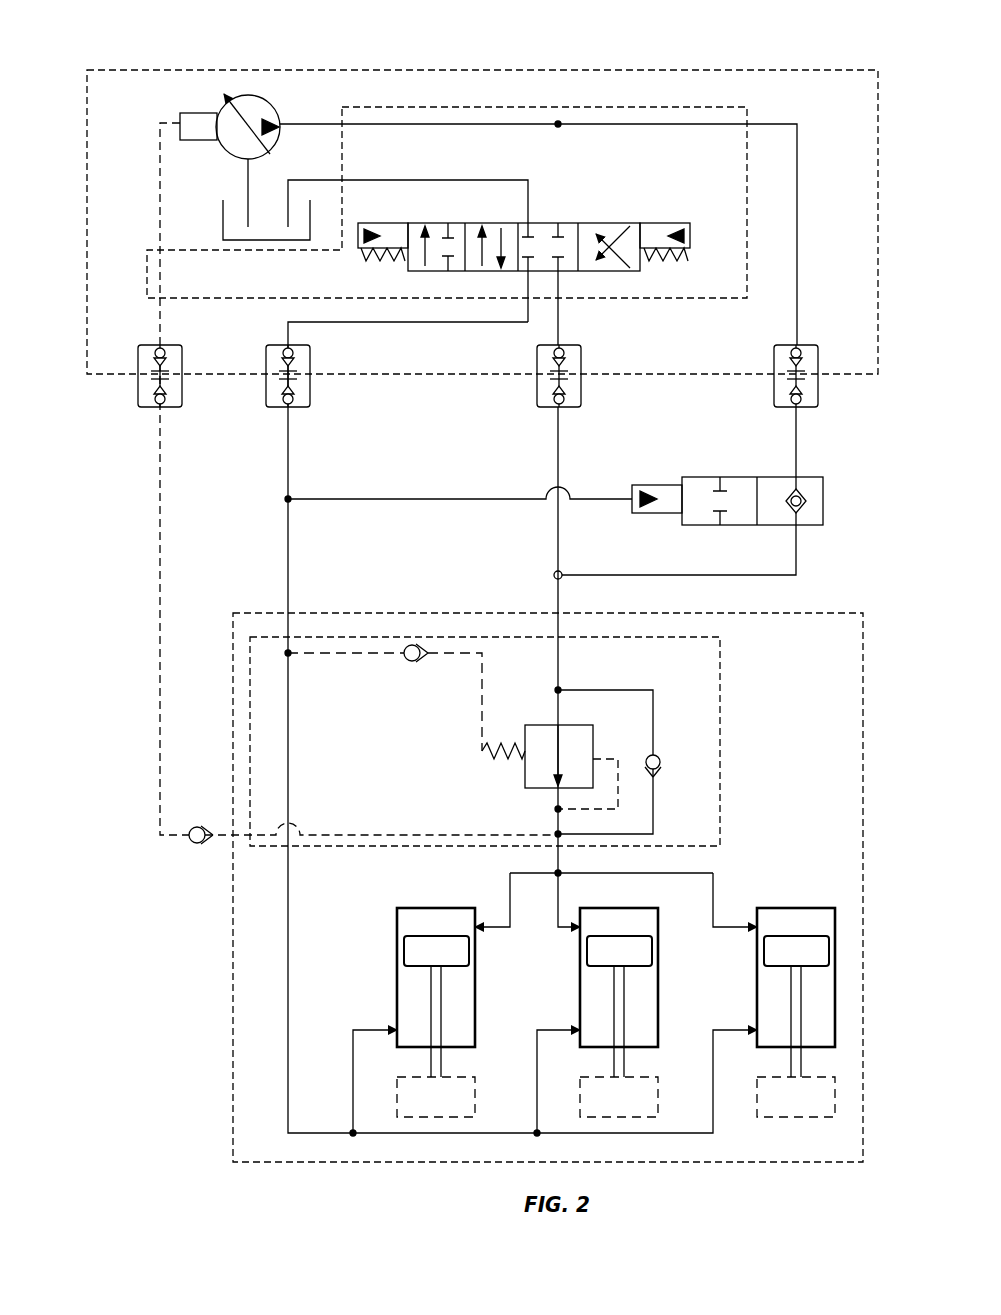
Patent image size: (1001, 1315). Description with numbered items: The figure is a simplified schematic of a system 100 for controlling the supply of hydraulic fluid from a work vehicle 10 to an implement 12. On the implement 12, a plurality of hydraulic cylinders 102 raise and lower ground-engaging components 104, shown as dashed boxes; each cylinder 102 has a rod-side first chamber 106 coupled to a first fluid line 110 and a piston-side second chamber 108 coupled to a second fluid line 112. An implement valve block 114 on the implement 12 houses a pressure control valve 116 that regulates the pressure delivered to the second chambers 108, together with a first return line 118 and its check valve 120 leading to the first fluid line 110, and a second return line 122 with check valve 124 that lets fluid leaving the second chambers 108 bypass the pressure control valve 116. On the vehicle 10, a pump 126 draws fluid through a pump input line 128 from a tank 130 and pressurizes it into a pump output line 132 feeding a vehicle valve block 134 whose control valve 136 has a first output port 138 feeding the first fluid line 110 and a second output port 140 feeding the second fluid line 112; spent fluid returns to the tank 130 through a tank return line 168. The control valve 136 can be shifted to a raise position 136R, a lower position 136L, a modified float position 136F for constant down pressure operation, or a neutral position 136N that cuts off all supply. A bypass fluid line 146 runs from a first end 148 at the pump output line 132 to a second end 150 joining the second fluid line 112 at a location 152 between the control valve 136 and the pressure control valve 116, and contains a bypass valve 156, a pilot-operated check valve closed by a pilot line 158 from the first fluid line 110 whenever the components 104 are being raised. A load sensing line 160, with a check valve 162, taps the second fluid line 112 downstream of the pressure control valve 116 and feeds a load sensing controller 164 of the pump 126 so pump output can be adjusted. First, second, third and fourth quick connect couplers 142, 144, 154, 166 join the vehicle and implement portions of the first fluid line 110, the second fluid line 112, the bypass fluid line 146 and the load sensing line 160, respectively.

The work vehicle 10 is at (83, 87).
The implement 12 is at (233, 1030).
The system 100 is at (102, 470).
The hydraulic cylinders 102 is at (397, 957).
The ground-engaging components 104 is at (458, 1077).
The first chamber 106 is at (465, 1010).
The second chamber 108 is at (436, 908).
The first fluid line 110 is at (388, 322).
The second fluid line 112 is at (560, 324).
The implement valve block 114 is at (720, 720).
The pressure control valve 116 is at (540, 725).
The first return line 118 is at (332, 653).
The check valve 120 is at (420, 660).
The second return line 122 is at (655, 710).
The check valve 124 is at (660, 760).
The pump 126 is at (262, 96).
The pump input line 128 is at (248, 173).
The tank 130 is at (223, 219).
The pump output line 132 is at (398, 126).
The vehicle valve block 134 is at (727, 107).
The control valve 136 is at (652, 222).
The modified float position 136F is at (400, 271).
The raise position 136R is at (580, 210).
The lower position 136L is at (482, 223).
The neutral position 136N is at (568, 223).
The first output port 138 is at (524, 280).
The second output port 140 is at (562, 275).
The first quick connect coupler 142 is at (312, 392).
The second quick connect coupler 144 is at (582, 392).
The bypass fluid line 146 is at (798, 238).
The first end 148 is at (585, 124).
The second end 150 is at (570, 575).
The location 152 is at (545, 570).
The third quick connect coupler 154 is at (819, 356).
The bypass valve 156 is at (745, 477).
The pilot line 158 is at (390, 499).
The load sensing line 160 is at (160, 186).
The check valve 162 is at (192, 827).
The load sensing controller 164 is at (196, 113).
The fourth quick connect coupler 166 is at (182, 392).
The tank return line 168 is at (290, 180).